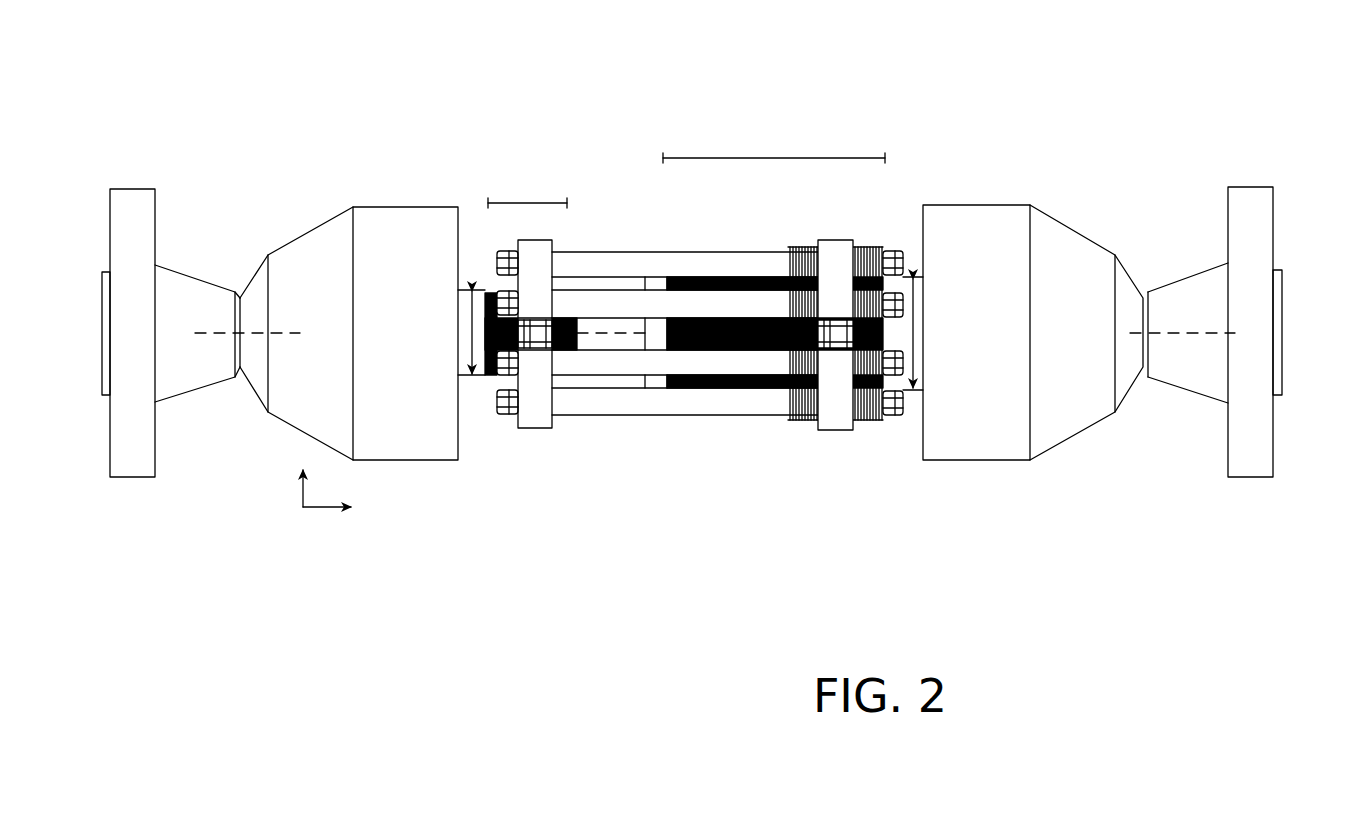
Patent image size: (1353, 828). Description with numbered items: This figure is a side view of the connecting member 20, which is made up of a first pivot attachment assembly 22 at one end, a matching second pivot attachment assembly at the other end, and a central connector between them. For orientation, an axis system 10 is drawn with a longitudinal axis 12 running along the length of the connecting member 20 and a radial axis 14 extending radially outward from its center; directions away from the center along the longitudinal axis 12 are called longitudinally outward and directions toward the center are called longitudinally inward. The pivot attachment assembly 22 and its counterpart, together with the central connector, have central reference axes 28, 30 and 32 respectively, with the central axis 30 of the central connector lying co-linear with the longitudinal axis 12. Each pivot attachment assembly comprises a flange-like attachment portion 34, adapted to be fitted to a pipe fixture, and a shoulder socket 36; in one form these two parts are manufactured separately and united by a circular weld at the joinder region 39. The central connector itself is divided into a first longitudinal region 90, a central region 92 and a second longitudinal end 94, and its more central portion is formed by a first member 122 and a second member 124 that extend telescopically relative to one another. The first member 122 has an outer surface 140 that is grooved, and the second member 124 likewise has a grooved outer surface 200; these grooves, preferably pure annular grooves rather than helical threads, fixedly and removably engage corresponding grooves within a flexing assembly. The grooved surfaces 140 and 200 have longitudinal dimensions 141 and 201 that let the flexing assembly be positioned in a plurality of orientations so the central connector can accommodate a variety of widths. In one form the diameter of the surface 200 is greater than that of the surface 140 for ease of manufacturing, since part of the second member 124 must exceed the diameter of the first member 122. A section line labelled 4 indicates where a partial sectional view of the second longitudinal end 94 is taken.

The section line 4- 4 is at (692, 293).
The axis system 10 is at (301, 513).
The longitudinal axis 12 is at (343, 507).
The radial axis 14 is at (305, 473).
The connecting member 20 is at (282, 165).
The first pivot attachment assembly 22 is at (260, 225).
The central reference axis 28 is at (223, 335).
The central axis 30 is at (603, 338).
The central reference axis 32 is at (1180, 335).
The attachment portion 34 is at (120, 195).
The shoulder socket 36 is at (330, 228).
The joinder region 39 is at (240, 297).
The first longitudinal region 90 is at (472, 390).
The central region 92 is at (695, 430).
The second longitudinal end 94 is at (910, 408).
The first member 122 is at (485, 293).
The second member 124 is at (656, 288).
The outer surface 140 is at (565, 320).
The longitudinal dimension 141 is at (468, 340).
The outer surface 200 is at (757, 283).
The longitudinal dimension 201 is at (752, 158).